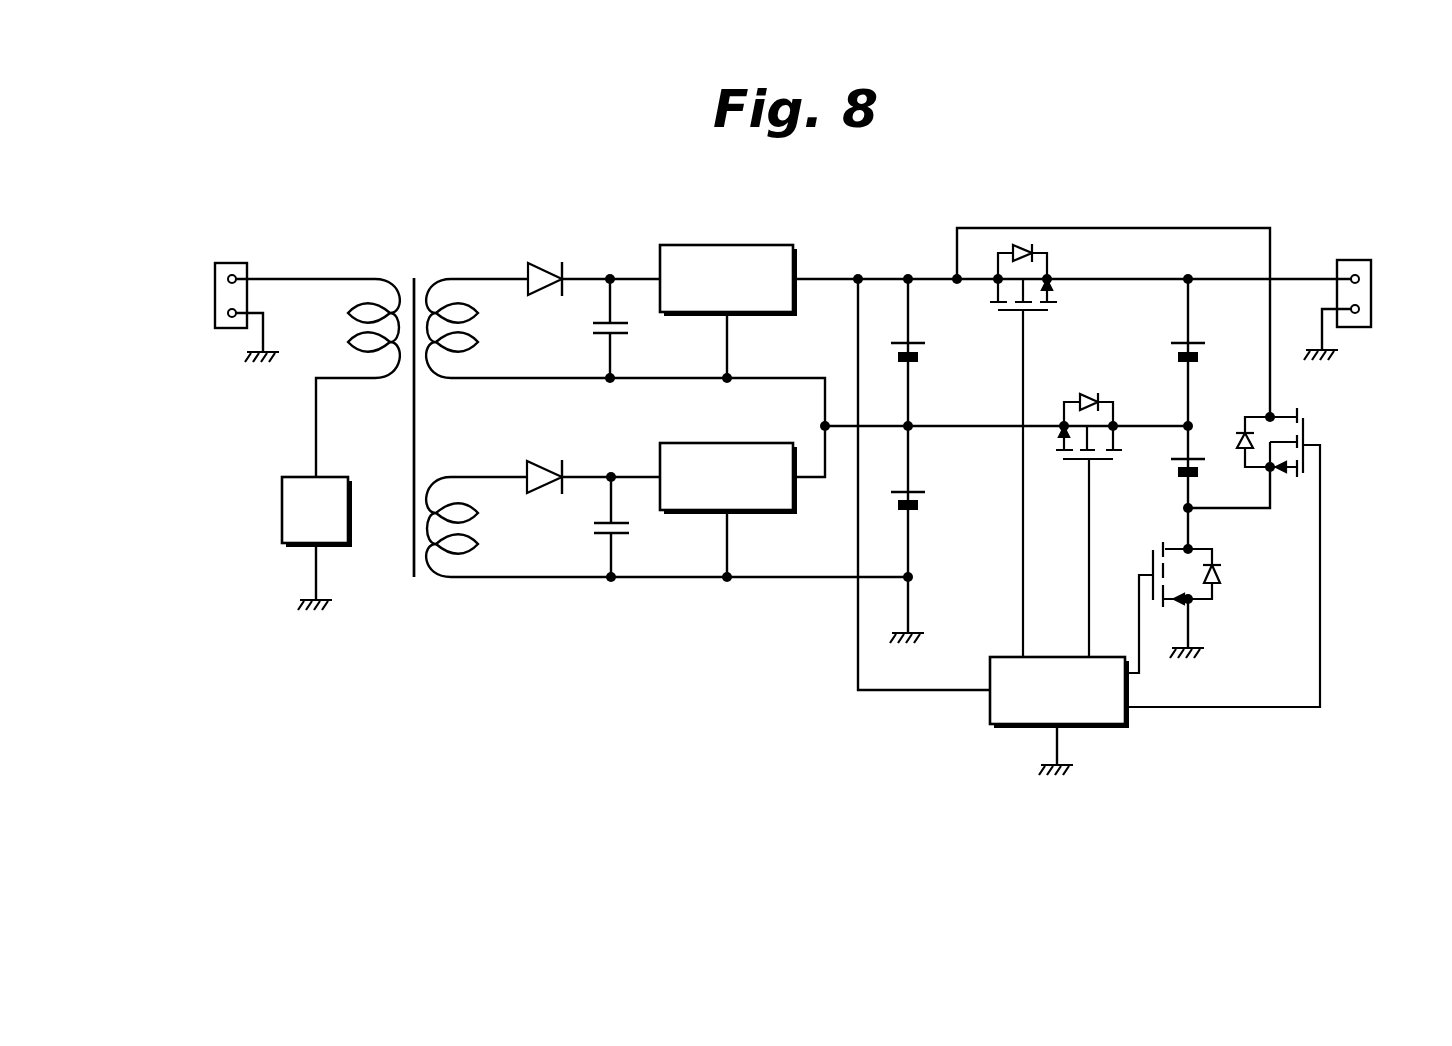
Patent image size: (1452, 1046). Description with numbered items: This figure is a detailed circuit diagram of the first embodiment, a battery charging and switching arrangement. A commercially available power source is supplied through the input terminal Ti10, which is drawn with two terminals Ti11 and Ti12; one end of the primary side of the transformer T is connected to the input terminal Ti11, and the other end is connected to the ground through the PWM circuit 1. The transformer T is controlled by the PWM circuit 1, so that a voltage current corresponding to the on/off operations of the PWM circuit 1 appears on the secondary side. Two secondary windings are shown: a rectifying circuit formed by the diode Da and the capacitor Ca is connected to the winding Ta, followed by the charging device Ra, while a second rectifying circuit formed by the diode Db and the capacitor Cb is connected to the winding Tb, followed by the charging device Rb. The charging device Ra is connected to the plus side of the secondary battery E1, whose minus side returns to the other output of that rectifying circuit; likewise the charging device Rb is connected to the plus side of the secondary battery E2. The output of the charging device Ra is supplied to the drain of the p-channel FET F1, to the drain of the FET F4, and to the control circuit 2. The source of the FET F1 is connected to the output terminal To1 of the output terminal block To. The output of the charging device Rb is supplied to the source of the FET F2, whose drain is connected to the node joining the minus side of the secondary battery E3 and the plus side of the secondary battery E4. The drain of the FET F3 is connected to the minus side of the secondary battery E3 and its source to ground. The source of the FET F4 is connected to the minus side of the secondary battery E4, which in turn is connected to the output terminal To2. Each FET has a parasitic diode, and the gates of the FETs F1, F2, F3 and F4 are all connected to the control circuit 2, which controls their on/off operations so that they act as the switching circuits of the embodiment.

The input terminal Ti10 is at (231, 263).
The input terminal Ti11 is at (214, 279).
The input terminal Ti12 is at (214, 313).
The transformer T is at (412, 262).
The winding Ta is at (461, 262).
The winding Tb is at (461, 462).
The diode Da is at (544, 262).
The diode Db is at (543, 462).
The capacitor Ca is at (593, 330).
The capacitor Cb is at (593, 530).
The charging device Ra is at (723, 245).
The charging device Rb is at (728, 443).
The PWM circuit 1 is at (282, 510).
The control circuit 2 is at (990, 709).
The secondary battery E1 is at (927, 352).
The secondary battery E2 is at (927, 502).
The secondary battery E3 is at (1169, 344).
The secondary battery E4 is at (1203, 460).
The p-channel type FET F1 is at (1040, 315).
The p-channel type FET F2 is at (1073, 465).
The p-channel type FET F3 is at (1154, 557).
The p-channel type FET F4 is at (1300, 480).
The output terminal block To is at (1351, 258).
The output terminal To1 is at (1375, 277).
The output terminal To2 is at (1375, 308).